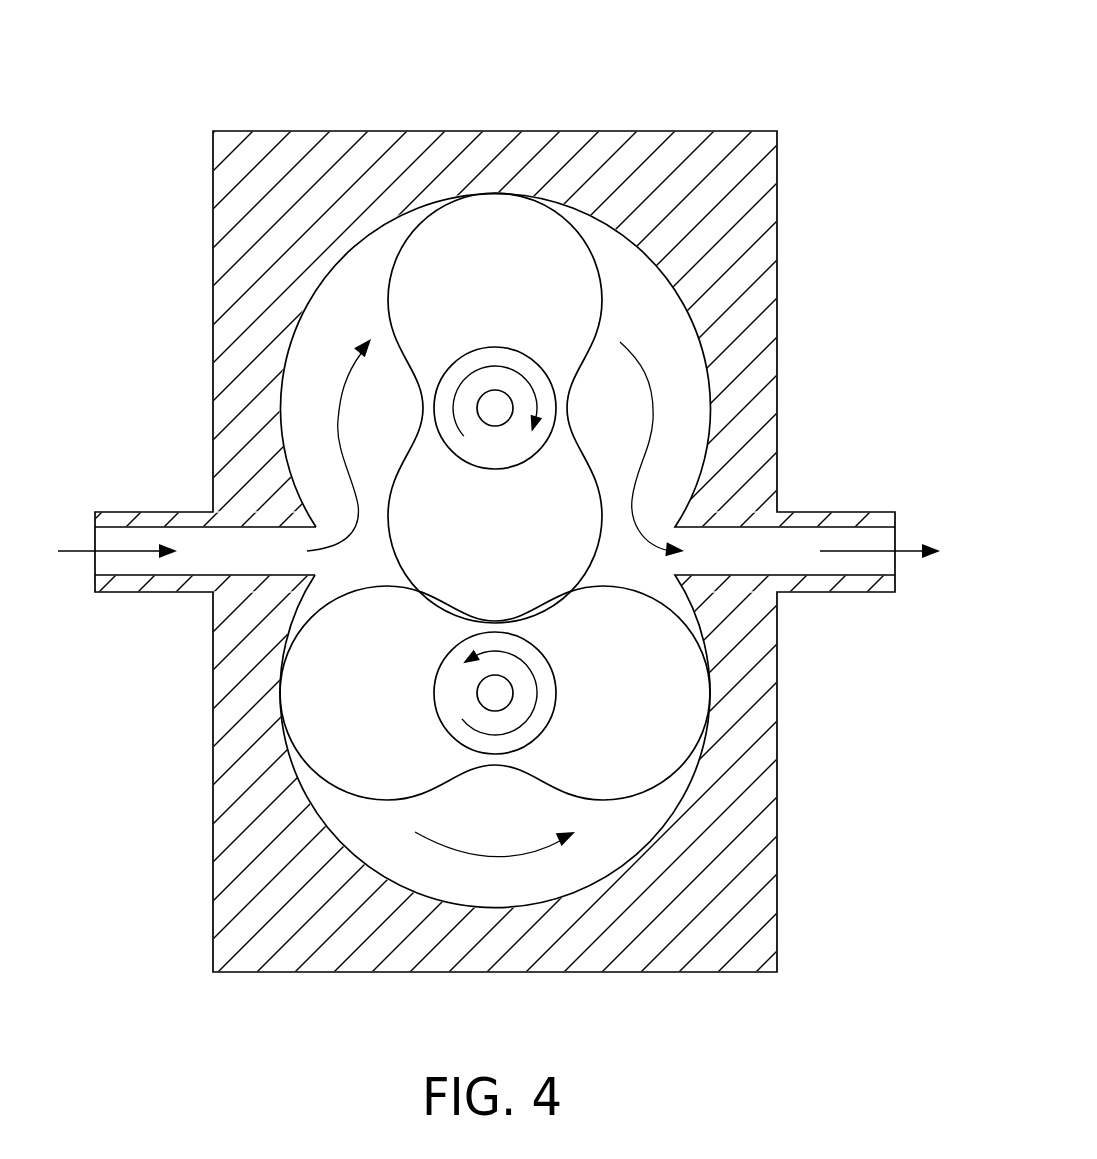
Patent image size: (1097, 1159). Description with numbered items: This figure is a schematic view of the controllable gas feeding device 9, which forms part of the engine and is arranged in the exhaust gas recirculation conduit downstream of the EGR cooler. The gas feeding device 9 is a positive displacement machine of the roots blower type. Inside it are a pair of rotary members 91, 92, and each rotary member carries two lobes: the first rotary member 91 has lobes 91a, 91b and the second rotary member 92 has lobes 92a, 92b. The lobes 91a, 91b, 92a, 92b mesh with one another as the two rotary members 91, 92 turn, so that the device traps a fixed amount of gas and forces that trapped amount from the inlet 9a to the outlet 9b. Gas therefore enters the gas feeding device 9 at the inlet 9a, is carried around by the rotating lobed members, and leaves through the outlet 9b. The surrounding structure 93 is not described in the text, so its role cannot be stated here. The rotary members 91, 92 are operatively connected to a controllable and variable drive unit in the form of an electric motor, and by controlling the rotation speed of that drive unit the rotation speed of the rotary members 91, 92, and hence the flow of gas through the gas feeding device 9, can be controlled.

The gas feeding device 9 is at (771, 70).
The inlet 9a is at (95, 551).
The outlet 9b is at (895, 551).
The rotary member 91 is at (363, 343).
The lobe 91a is at (503, 248).
The lobe 91b is at (493, 570).
The rotary member 92 is at (497, 693).
The lobe 92a is at (333, 697).
The lobe 92b is at (657, 697).
The pump housing 93 is at (357, 130).